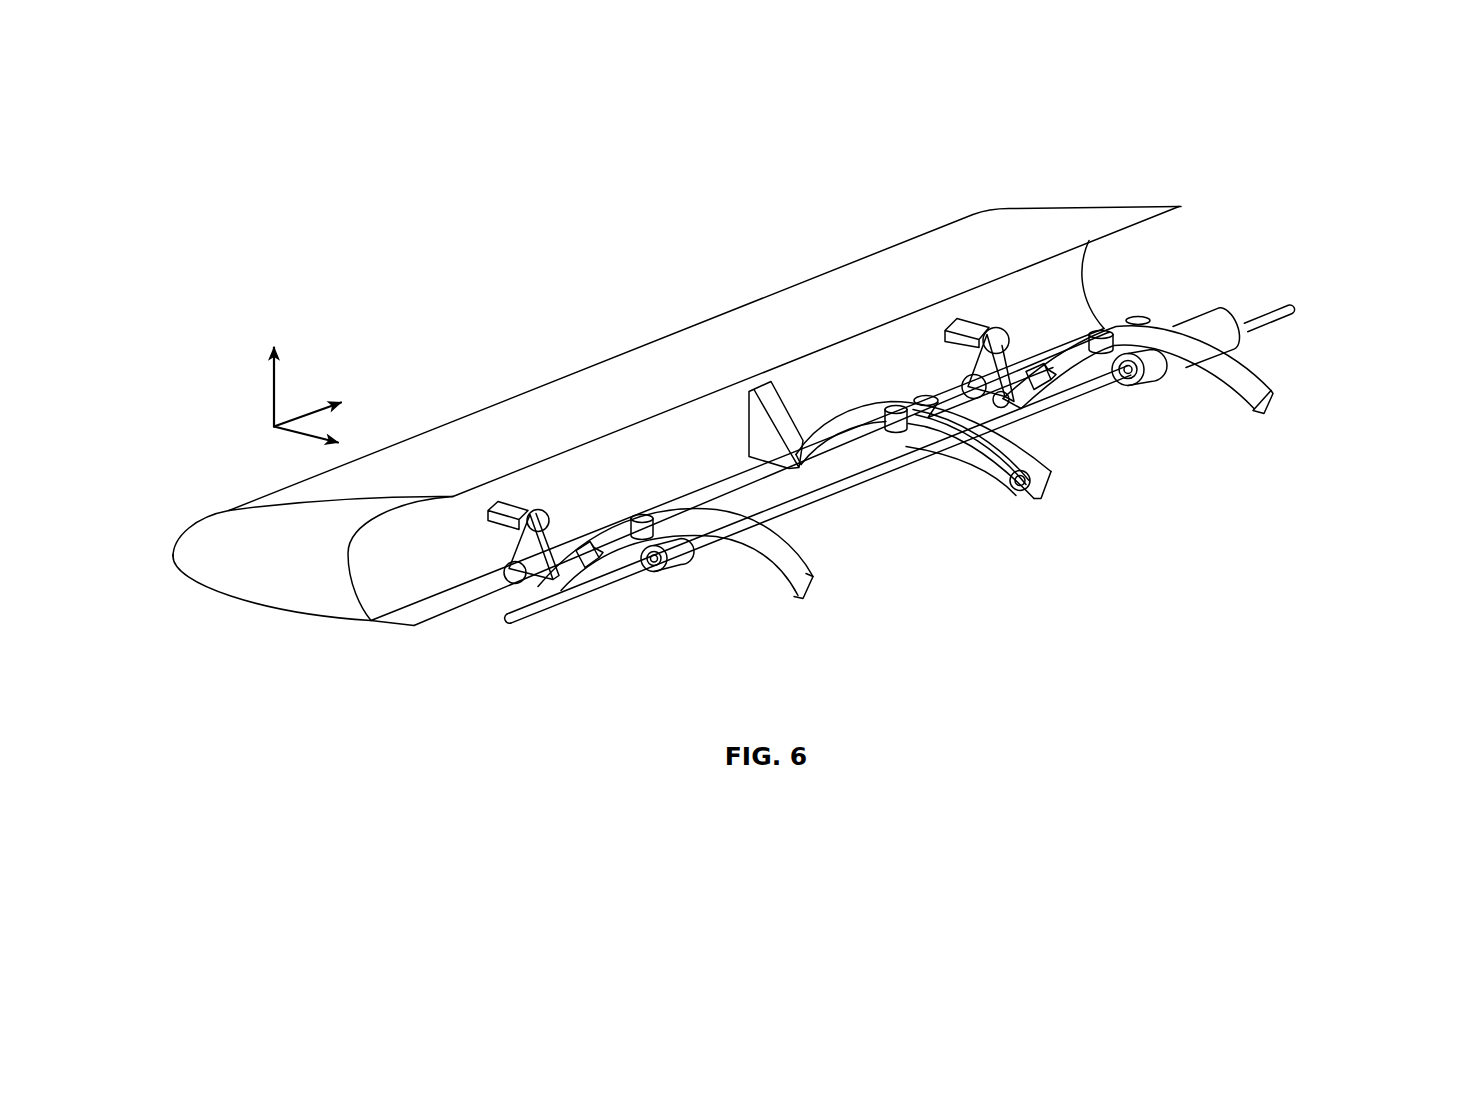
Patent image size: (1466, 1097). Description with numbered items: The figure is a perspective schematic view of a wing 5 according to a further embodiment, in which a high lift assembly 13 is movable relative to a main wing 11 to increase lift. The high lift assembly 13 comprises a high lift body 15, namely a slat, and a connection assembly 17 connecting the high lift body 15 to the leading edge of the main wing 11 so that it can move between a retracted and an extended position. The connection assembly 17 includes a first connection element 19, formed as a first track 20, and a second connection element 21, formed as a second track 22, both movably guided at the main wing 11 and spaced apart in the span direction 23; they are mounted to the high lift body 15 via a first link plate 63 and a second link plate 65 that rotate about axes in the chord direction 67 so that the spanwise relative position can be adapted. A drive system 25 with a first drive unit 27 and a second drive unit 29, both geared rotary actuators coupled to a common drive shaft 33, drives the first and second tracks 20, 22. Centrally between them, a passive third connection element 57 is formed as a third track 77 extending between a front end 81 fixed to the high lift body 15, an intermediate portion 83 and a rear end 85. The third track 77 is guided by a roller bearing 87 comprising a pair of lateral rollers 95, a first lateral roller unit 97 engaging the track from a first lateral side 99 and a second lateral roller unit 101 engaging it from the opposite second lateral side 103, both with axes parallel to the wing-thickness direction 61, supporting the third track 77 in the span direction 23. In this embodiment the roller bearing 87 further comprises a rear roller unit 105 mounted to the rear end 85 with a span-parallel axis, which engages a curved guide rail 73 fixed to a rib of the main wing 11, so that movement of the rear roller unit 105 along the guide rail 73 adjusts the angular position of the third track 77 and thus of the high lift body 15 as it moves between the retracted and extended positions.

The wing 5 is at (192, 238).
The high lift assembly 13 is at (1262, 163).
The high lift body 15 is at (656, 383).
The connection assembly 17 is at (1330, 277).
The first lateral side 99 is at (101, 554).
The second lateral side 103 is at (1425, 319).
The main wing 11 is at (1172, 565).
The wing-thickness direction 61 is at (271, 367).
The span direction 23 is at (315, 408).
The chord direction 67 is at (308, 437).
The drive system 25 is at (912, 458).
The first drive unit 27 is at (650, 602).
The second drive unit 29 is at (1184, 308).
The first connection element 19 is at (675, 570).
The first track 20 is at (760, 563).
The second connection element 21 is at (1138, 401).
The second track 22 is at (1245, 404).
The drive shaft 33 is at (1290, 318).
The first link plate 63 is at (523, 563).
The second link plate 65 is at (1022, 363).
The front end 81 is at (811, 389).
The intermediate portion 83 is at (802, 448).
The roller bearing 87 is at (903, 390).
The third connection element 57 is at (923, 478).
The third track 77 is at (1007, 465).
The guide rail 73 is at (1017, 447).
The pair of lateral rollers 95 is at (911, 467).
The first lateral roller unit 97 is at (897, 433).
The second lateral roller unit 101 is at (924, 398).
The rear roller unit 105 is at (1031, 488).
The rear end 85 is at (1040, 479).